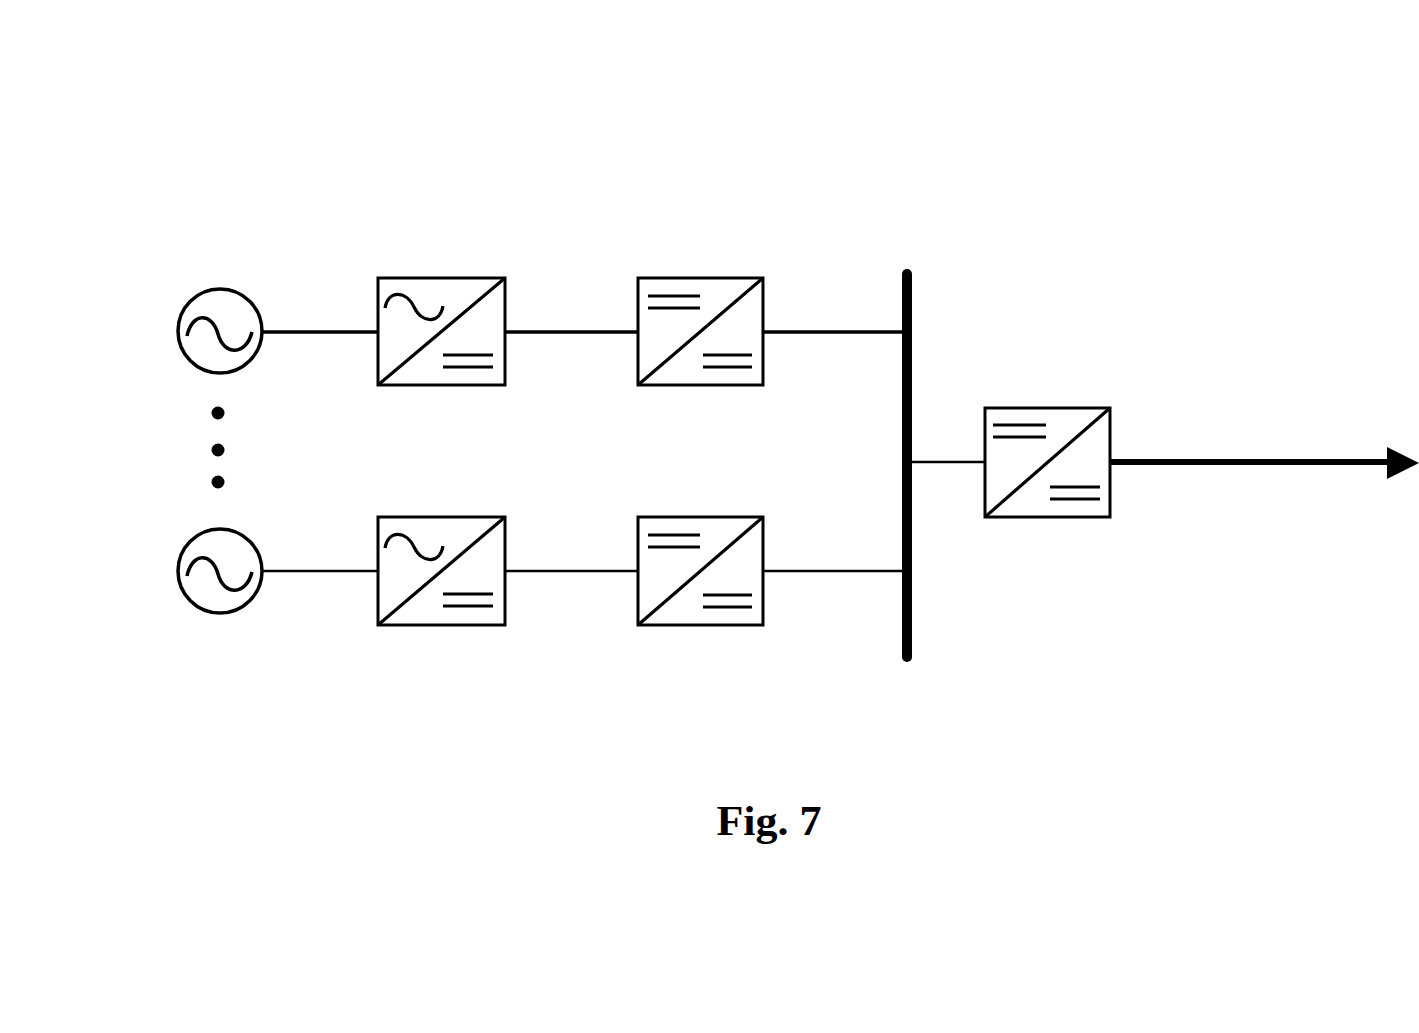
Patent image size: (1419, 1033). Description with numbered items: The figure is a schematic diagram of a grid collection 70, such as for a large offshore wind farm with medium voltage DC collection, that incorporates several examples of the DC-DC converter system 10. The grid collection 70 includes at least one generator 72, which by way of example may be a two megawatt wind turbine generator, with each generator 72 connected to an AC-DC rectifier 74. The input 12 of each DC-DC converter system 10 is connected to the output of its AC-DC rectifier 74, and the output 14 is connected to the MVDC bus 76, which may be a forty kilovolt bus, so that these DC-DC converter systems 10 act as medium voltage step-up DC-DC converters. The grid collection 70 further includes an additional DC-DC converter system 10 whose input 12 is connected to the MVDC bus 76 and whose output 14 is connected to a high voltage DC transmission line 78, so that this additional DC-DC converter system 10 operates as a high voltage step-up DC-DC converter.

The grid collection 70 is at (166, 128).
The generator 72 is at (200, 368).
The AC-DC rectifier 74 is at (458, 386).
The DC-DC converter system 10 is at (740, 386).
The input 12 is at (626, 325).
The output 14 is at (774, 325).
The MVDC bus 76 is at (902, 625).
The high voltage DC transmission line 78 is at (1248, 484).